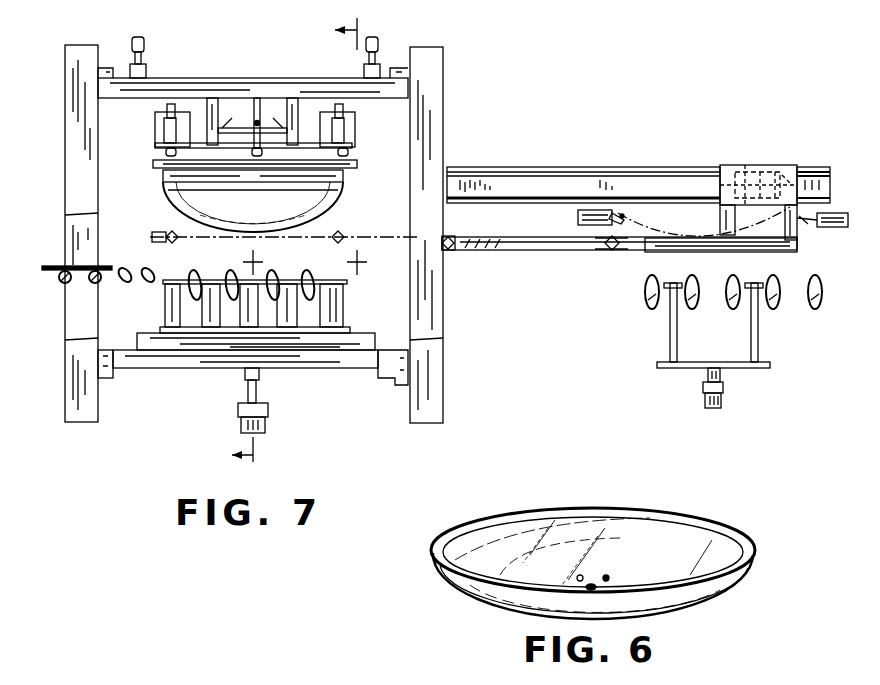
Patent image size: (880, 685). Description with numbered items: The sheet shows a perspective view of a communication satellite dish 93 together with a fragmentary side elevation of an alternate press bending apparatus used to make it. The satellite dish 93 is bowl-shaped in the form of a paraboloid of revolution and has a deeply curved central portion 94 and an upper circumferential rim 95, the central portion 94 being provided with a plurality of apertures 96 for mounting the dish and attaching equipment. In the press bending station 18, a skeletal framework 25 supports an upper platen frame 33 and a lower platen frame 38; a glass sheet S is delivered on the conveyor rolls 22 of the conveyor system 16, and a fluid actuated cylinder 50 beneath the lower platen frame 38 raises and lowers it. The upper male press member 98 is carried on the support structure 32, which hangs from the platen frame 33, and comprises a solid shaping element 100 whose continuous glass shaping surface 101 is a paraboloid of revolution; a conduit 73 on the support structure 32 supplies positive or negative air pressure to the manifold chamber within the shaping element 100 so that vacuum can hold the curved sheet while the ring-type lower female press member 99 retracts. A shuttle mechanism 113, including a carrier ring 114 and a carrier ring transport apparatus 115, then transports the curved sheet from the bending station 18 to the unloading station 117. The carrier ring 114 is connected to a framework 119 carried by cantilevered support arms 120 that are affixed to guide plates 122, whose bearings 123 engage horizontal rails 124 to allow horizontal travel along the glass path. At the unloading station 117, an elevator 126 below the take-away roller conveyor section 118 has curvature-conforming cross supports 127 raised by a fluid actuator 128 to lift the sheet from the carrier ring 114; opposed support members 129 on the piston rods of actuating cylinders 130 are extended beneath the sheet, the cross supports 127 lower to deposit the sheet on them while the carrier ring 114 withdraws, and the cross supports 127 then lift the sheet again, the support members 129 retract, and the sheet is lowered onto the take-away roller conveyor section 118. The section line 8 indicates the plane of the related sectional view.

In FIG. 7, the section line 8- 8 is at (304, 246).
In FIG. 7, the continuous conveyor system 16 is at (86, 285).
In FIG. 7, the press bending station 18 is at (480, 55).
In FIG. 7, the conveyor rolls 22 is at (312, 276).
In FIG. 7, the skeletal framework 25 is at (63, 106).
In FIG. 7, the support structure 32 is at (163, 166).
In FIG. 7, the upper platen frame 33 is at (269, 76).
In FIG. 7, the lower platen frame 38 is at (176, 371).
In FIG. 7, the fluid actuated cylinder 50 is at (270, 425).
In FIG. 7, the conduit 73 is at (256, 121).
In FIG. 7, the upper male press member 98 is at (160, 212).
In FIG. 7, the lower female press member 99 is at (362, 298).
In FIG. 7, the shaping element 100 is at (325, 210).
In FIG. 7, the glass shaping surface 101 is at (184, 240).
In FIG. 7, the shuttle mechanism 113 is at (673, 148).
In FIG. 7, the carrier ring 114 is at (520, 252).
In FIG. 7, the carrier ring transport apparatus 115 is at (733, 155).
In FIG. 7, the unloading station 117 is at (682, 346).
In FIG. 7, the take-away roller conveyor section 118 is at (646, 313).
In FIG. 7, the framework 119 is at (612, 258).
In FIG. 7, the cantilevered support arms 120 is at (706, 252).
In FIG. 7, the guide plates 122 is at (754, 170).
In FIG. 7, the bearings 123 is at (796, 166).
In FIG. 7, the horizontal rails 124 is at (492, 196).
In FIG. 7, the elevator 126 is at (690, 383).
In FIG. 7, the cross supports 127 is at (672, 283).
In FIG. 7, the fluid actuator 128 is at (724, 402).
In FIG. 7, the support members 129 is at (621, 212).
In FIG. 7, the actuating cylinders 130 is at (578, 218).
In FIG. 7, the glass sheet S is at (53, 265).
In FIG. 6, the satellite dish 93 is at (714, 519).
In FIG. 6, the central portion 94 is at (563, 578).
In FIG. 6, the rim 95 is at (748, 544).
In FIG. 6, the apertures 96 is at (592, 585).